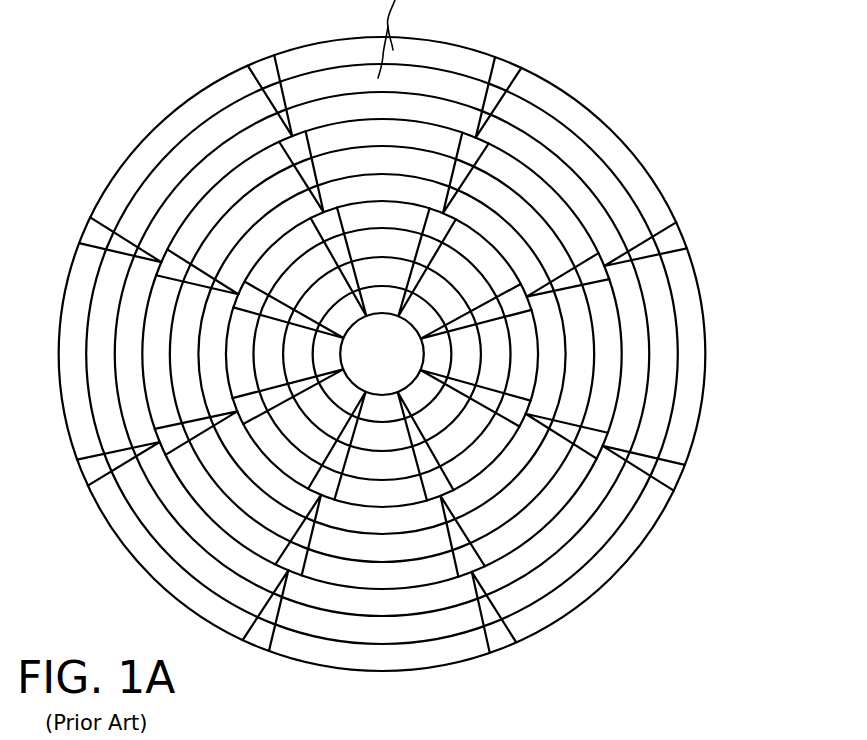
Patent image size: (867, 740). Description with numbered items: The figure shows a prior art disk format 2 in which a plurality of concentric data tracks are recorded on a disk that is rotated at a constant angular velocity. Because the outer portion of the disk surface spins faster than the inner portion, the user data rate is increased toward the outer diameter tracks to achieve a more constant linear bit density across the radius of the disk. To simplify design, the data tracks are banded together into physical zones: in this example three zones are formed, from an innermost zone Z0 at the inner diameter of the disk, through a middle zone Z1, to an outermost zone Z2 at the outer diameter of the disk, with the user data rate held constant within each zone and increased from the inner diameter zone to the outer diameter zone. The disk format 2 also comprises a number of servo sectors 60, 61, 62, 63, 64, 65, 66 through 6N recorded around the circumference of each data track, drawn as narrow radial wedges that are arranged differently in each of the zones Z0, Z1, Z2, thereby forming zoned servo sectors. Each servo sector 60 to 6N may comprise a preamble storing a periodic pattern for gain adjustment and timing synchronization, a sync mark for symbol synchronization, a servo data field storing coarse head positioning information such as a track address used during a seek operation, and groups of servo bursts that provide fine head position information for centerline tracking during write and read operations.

The disk format 2 is at (601, 111).
The servo sector 60 is at (507, 70).
The servo sector 61 is at (670, 238).
The servo sector 62 is at (672, 478).
The servo sector 63 is at (323, 739).
The servo sector 64 is at (258, 637).
The servo sector 65 is at (88, 475).
The servo sector 66 is at (93, 223).
The servo sector 6N is at (268, 63).
The physical zone Z0 is at (381, 354).
The physical zone Z1 is at (382, 354).
The physical zone Z2 is at (382, 354).